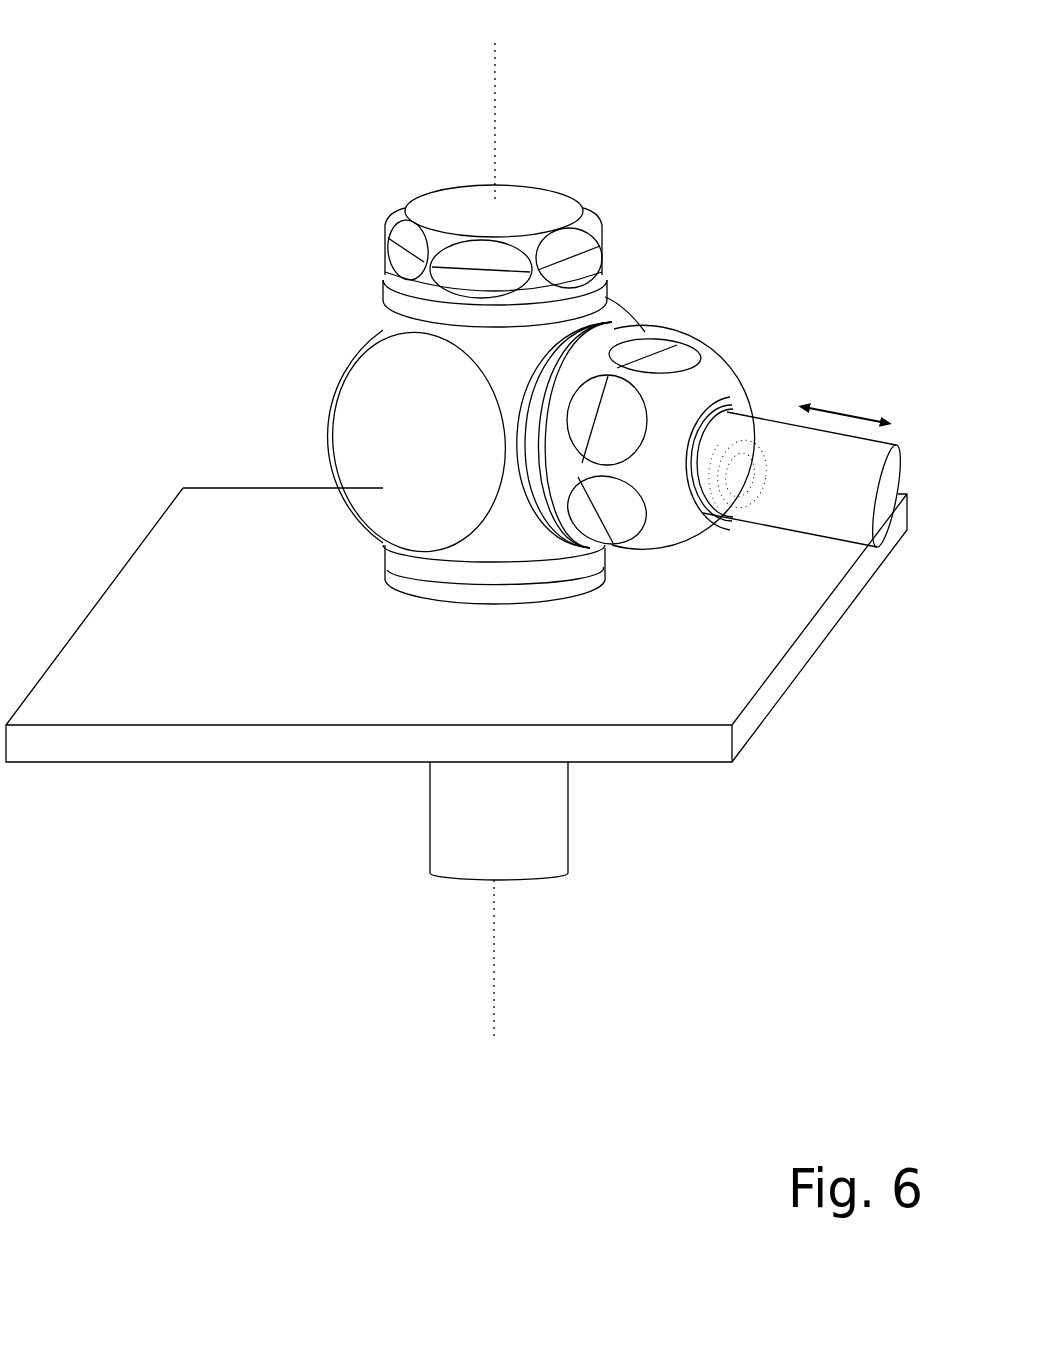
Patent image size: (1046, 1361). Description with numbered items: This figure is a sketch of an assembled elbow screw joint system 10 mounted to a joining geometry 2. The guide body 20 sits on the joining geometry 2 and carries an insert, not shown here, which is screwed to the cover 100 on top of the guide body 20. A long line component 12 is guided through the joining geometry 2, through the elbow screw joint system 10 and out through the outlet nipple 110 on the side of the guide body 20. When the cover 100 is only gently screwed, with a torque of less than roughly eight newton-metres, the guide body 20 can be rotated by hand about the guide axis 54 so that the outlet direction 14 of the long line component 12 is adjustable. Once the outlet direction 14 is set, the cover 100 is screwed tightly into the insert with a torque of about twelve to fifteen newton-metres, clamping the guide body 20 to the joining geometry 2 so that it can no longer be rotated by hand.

The elbow screw joint system 10 is at (322, 150).
The cover 100 is at (385, 250).
The outlet nipple 110 is at (682, 346).
The guide body 20 is at (394, 428).
The guide axis 54 is at (495, 92).
The long line component 12 is at (768, 448).
The outlet direction 14 is at (847, 412).
The joining geometry 2 is at (737, 769).